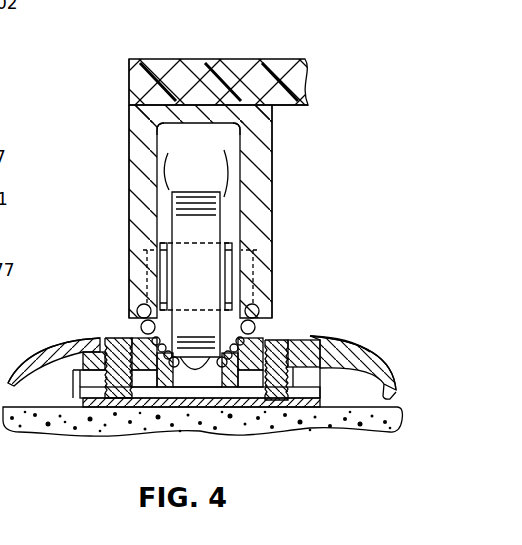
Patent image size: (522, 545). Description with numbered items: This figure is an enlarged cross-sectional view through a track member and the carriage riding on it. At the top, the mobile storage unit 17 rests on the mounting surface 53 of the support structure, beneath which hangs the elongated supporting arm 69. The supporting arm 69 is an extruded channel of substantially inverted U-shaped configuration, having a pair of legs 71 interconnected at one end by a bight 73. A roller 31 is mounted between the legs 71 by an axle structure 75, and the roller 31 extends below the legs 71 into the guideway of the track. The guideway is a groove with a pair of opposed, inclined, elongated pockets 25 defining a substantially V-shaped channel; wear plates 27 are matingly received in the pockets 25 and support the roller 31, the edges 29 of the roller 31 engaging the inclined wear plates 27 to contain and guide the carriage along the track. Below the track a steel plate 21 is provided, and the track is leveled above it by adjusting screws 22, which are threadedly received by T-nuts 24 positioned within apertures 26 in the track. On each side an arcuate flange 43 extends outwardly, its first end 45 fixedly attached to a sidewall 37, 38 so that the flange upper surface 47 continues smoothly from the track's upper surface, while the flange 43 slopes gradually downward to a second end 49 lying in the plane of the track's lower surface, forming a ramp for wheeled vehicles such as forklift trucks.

The mobile storage unit 17 is at (245, 60).
The mounting surface 53 is at (130, 98).
The elongated supporting arm 69 is at (130, 140).
The leg 71 is at (128, 185).
The roller edge 29 is at (229, 159).
The bight 73 is at (196, 173).
The roller 31 is at (193, 192).
The axle structure 75 is at (232, 244).
The pocket 25 is at (195, 335).
The aperture 26 is at (124, 338).
The T-nut 24 is at (100, 340).
The first end 45 is at (327, 341).
The flange upper surface 47 is at (66, 356).
The arcuate flange 43 is at (25, 378).
The sidewall 38 is at (70, 384).
The sidewall 37 is at (325, 382).
The second end 49 is at (388, 395).
The steel plate 21 is at (86, 400).
The adjusting screw 22 is at (163, 366).
The wear plate 27 is at (226, 366).